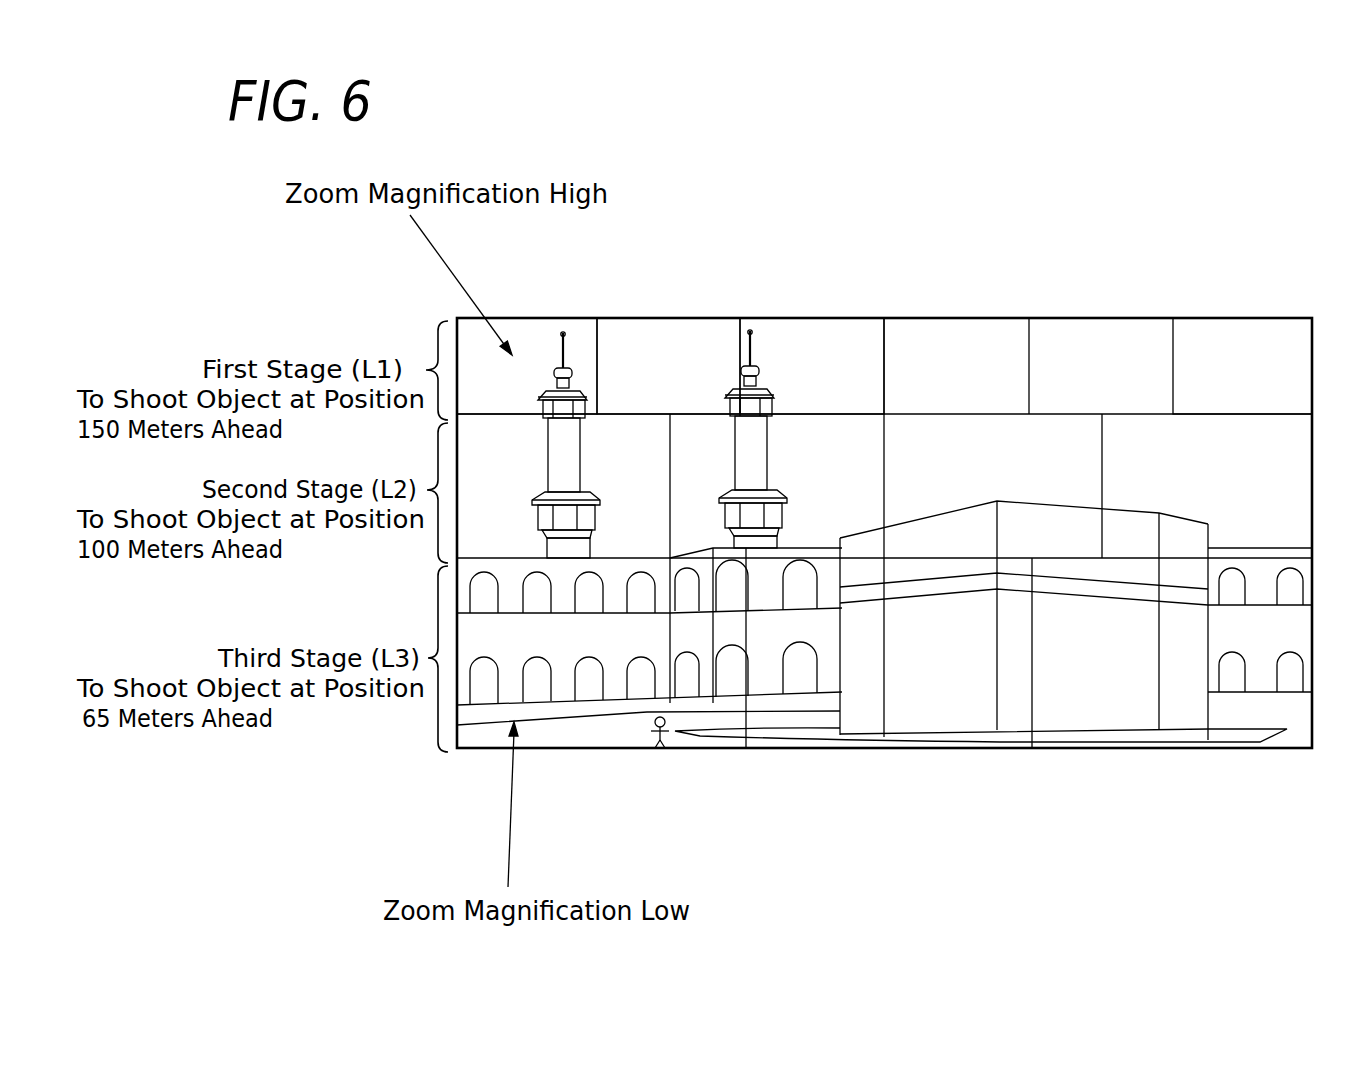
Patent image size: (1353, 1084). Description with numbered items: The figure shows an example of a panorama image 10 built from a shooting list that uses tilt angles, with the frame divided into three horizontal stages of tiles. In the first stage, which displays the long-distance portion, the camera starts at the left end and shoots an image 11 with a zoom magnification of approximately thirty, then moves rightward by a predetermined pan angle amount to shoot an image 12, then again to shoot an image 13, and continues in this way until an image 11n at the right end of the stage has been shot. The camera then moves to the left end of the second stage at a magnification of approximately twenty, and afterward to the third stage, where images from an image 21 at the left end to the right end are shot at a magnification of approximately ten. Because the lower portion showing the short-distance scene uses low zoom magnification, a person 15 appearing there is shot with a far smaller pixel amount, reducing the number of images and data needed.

The panorama image 10 is at (1116, 308).
The image 11 is at (533, 326).
The image 12 is at (668, 326).
The image 13 is at (828, 326).
The image 11n is at (1258, 324).
The image 21 is at (593, 750).
The person 15 is at (662, 750).